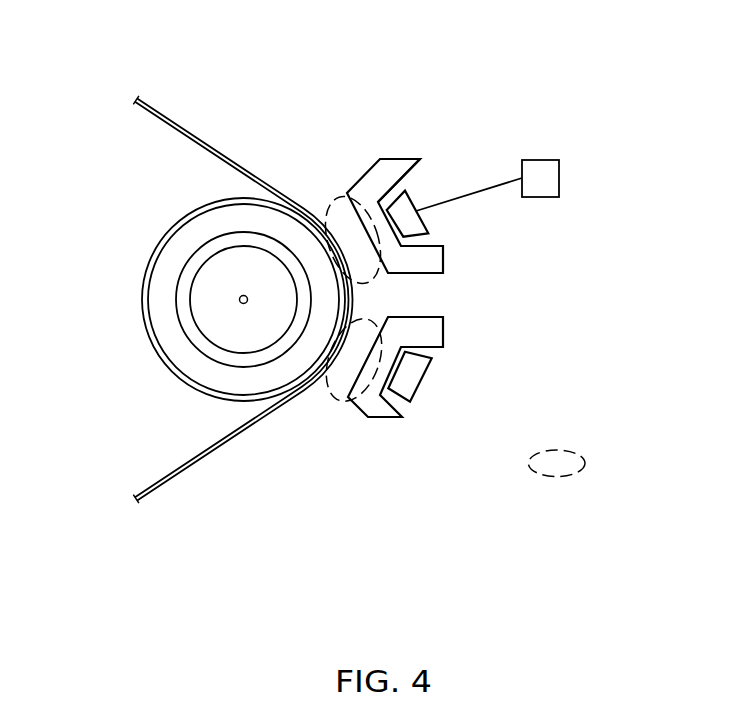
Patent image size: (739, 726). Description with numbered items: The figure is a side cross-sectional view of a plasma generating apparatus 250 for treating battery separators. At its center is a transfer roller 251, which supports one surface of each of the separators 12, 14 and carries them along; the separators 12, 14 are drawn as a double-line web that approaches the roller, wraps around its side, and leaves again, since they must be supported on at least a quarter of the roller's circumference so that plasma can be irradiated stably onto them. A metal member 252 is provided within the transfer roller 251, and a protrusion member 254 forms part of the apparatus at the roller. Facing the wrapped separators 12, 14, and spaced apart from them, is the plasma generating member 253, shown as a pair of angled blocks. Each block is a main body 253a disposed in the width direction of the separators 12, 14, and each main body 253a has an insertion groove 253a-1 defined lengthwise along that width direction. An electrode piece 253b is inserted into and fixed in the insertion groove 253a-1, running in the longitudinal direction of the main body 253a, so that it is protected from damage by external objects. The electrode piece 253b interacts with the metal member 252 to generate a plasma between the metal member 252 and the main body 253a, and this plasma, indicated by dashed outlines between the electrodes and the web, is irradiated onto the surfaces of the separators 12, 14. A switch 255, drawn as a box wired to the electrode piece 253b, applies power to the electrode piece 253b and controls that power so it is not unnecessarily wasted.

The separator 12 is at (217, 299).
The separator 14 is at (177, 138).
The plasma generating apparatus 250 is at (558, 107).
The transfer roller 251 is at (173, 256).
The metal member 252 is at (212, 294).
The plasma generating member 253 is at (523, 248).
The main body 253a is at (443, 258).
The insertion groove 253a-1 is at (410, 172).
The electrode piece 253b is at (417, 222).
The protrusion member 254 is at (195, 383).
The switch 255 is at (560, 177).